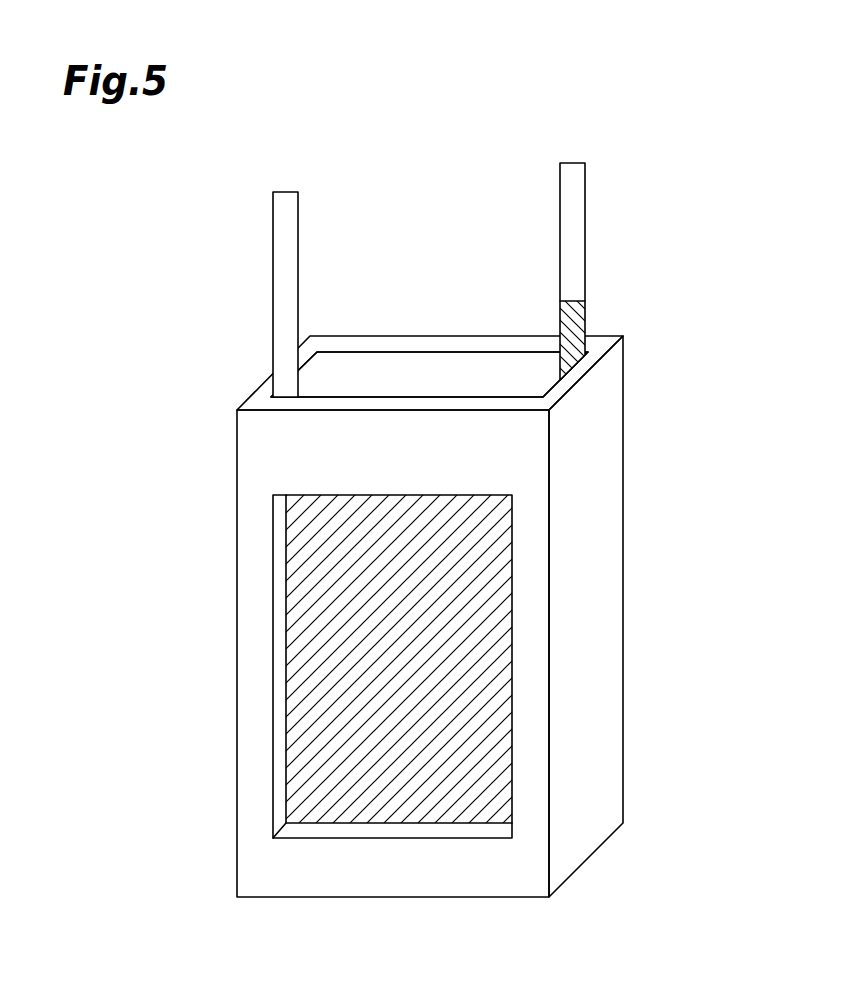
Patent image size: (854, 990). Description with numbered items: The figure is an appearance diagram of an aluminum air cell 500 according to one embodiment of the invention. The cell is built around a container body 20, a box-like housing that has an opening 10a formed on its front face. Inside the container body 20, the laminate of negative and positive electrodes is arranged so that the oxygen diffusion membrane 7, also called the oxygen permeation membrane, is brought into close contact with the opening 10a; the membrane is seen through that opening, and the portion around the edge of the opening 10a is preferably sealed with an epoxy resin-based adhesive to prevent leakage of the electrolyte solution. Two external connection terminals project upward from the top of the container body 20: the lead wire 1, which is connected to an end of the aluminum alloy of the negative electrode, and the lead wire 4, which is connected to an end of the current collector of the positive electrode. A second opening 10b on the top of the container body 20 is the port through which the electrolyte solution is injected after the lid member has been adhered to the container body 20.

The aluminum air cell 500 is at (647, 142).
The external connection terminal (lead wire) 1 is at (587, 228).
The external connection terminal (lead wire) 4 is at (272, 288).
The oxygen diffusion membrane 7 is at (350, 678).
The opening 10a is at (393, 806).
The opening 10b is at (419, 384).
The container body 20 is at (583, 605).